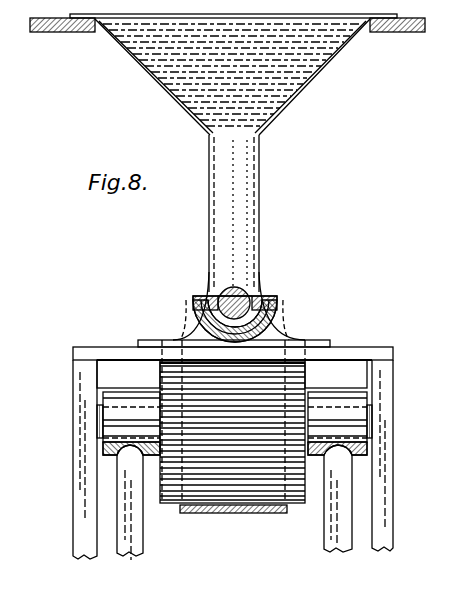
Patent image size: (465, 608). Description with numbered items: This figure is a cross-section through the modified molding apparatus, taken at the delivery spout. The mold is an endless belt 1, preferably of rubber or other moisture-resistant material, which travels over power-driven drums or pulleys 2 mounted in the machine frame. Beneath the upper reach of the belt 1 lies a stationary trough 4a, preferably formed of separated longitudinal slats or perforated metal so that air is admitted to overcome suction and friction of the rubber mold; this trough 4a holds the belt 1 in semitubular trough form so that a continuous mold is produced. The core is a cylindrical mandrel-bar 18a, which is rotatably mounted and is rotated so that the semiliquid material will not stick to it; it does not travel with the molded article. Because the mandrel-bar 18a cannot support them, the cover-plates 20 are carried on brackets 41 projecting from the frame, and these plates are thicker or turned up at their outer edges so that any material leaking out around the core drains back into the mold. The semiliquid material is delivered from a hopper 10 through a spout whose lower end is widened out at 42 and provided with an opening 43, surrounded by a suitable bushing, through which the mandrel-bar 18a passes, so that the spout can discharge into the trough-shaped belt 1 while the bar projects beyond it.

The hopper 10 is at (287, 60).
The cylindrical bar 18a is at (218, 288).
The trough 4a is at (197, 314).
The brackets 41 is at (278, 322).
The cover-plates 20 is at (274, 297).
The widened lower end of the spout 42 is at (256, 296).
The opening 43 is at (242, 289).
The endless belt 1 is at (239, 505).
The drums or pulleys 2 is at (232, 421).